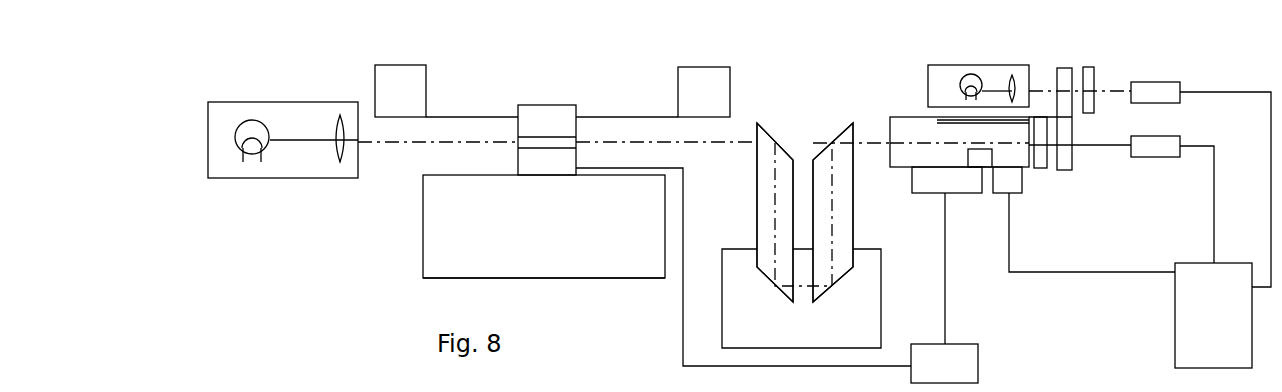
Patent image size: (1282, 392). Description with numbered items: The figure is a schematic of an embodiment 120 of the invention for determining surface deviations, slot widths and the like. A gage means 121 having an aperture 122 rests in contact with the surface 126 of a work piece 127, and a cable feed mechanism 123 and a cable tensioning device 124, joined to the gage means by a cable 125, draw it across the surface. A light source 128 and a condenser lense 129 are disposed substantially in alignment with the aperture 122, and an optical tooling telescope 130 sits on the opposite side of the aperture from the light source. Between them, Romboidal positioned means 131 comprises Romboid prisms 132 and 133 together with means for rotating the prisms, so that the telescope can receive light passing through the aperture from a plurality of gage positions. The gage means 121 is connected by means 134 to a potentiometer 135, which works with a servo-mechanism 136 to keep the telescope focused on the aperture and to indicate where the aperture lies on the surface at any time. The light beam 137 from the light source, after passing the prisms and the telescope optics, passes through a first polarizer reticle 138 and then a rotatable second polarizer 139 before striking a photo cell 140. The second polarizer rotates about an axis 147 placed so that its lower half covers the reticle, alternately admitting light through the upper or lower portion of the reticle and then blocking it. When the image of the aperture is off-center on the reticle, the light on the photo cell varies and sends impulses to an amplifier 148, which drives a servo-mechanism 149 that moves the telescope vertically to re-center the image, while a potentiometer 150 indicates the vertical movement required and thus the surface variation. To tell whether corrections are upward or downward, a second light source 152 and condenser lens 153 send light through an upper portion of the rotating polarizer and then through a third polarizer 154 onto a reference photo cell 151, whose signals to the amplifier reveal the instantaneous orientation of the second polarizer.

The embodiment 120 is at (768, 131).
The gage means 121 is at (540, 110).
The aperture 122 is at (520, 145).
The cable feed mechanism 123 is at (380, 73).
The cable tensioning device 124 is at (685, 83).
The cable 125 is at (480, 116).
The surface 126 is at (425, 178).
The work piece 127 is at (603, 272).
The light source 128 is at (252, 121).
The condenser lense 129 is at (337, 160).
The optical tooling telescope 130 is at (905, 118).
The Romboidal positioned means 131 is at (870, 293).
The Romboid prism 132 is at (765, 237).
The Romboid prism 133 is at (842, 218).
The means 134 is at (683, 343).
The potentiometer 135 is at (970, 358).
The servo-mechanism 136 is at (915, 185).
The light beam 137 is at (727, 143).
The first polarizer reticle 138 is at (1040, 168).
The rotatable second polarizer 139 is at (1064, 70).
The photo cell 140 is at (1152, 158).
The axis 147 is at (1072, 117).
The amplifier 148 is at (1185, 310).
The servo-mechanism 149 is at (1015, 190).
The potentiometer 150 is at (975, 160).
The reference photo cell 151 is at (1160, 86).
The light source 152 is at (970, 75).
The condenser lens 153 is at (1012, 80).
The third polarizer 154 is at (1089, 72).